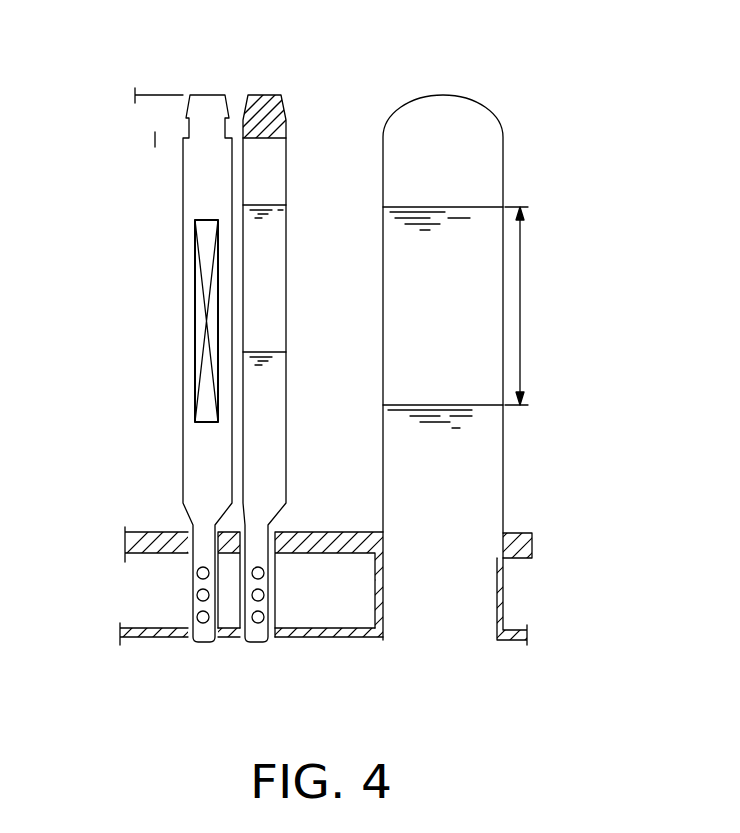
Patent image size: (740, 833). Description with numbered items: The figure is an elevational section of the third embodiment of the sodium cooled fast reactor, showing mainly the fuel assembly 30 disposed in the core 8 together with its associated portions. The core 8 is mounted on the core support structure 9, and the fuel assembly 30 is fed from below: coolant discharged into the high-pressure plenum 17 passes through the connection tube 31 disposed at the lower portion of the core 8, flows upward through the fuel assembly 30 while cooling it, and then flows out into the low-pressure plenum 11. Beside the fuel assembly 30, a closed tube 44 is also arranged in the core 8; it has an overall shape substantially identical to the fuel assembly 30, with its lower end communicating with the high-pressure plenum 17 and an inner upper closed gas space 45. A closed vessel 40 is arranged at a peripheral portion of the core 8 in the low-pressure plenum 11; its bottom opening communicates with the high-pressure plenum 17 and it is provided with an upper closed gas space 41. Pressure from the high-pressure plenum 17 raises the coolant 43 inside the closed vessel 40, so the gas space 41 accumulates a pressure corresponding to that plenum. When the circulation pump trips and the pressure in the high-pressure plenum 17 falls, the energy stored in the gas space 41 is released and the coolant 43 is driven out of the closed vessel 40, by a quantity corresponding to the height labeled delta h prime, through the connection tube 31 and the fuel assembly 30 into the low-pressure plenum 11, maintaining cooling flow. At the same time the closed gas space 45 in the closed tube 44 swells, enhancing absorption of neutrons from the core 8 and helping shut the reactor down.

The low-pressure plenum 11 is at (349, 88).
The core 8 is at (155, 140).
The inner upper closed gas space 45 is at (253, 180).
The closed tube 44 is at (243, 265).
The fuel assembly 30 is at (183, 430).
The connection tube 31 is at (188, 597).
The upper closed gas space 41 is at (400, 170).
The closed vessel 40 is at (503, 150).
The coolant 43 is at (468, 378).
The core support structure 9 is at (513, 533).
The high-pressure plenum 17 is at (438, 638).